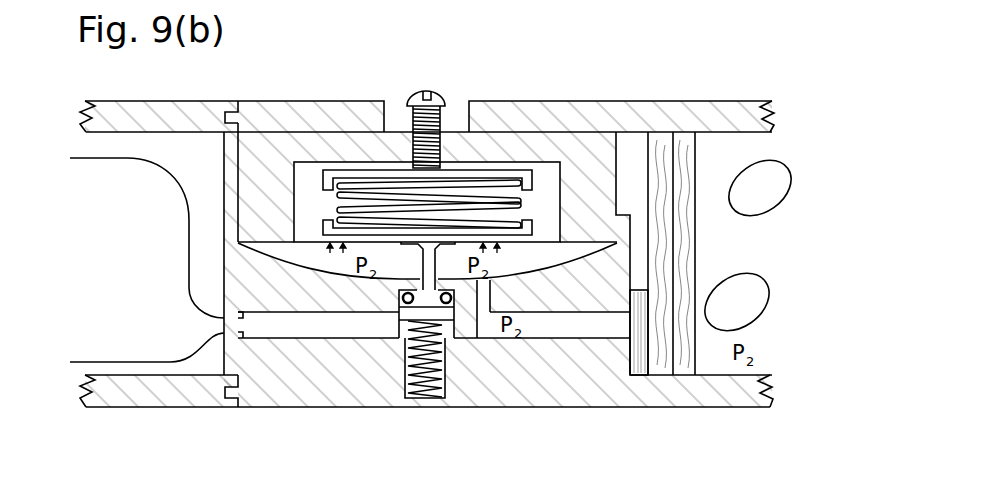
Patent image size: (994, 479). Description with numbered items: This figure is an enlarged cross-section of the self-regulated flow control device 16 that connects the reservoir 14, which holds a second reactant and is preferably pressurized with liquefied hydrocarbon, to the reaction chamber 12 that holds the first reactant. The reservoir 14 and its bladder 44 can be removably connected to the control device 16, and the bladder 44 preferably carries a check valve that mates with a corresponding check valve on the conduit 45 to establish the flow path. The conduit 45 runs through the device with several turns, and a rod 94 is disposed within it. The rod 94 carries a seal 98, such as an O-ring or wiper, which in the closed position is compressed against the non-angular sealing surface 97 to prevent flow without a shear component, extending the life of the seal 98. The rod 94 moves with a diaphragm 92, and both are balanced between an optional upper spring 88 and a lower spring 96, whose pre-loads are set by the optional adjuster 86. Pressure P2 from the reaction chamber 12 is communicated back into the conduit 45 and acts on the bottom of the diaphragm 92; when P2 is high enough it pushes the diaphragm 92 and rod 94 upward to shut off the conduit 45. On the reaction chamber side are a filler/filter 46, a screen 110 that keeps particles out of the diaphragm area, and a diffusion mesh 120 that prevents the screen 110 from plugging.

The reaction chamber 12 is at (733, 153).
The reservoir 14 is at (203, 152).
The self-regulated flow control device 16 is at (459, 95).
The bladder 44 is at (117, 178).
The conduit 45 is at (277, 333).
The filler/filter 46 is at (681, 140).
The adjuster 86 is at (439, 93).
The upper spring 88 is at (521, 205).
The diaphragm 92 is at (582, 238).
The rod 94 is at (402, 285).
The lower spring 96 is at (408, 398).
The sealing surface 97 is at (452, 283).
The seal 98 is at (453, 283).
The screen 110 is at (640, 367).
The diffusion mesh 120 is at (663, 358).